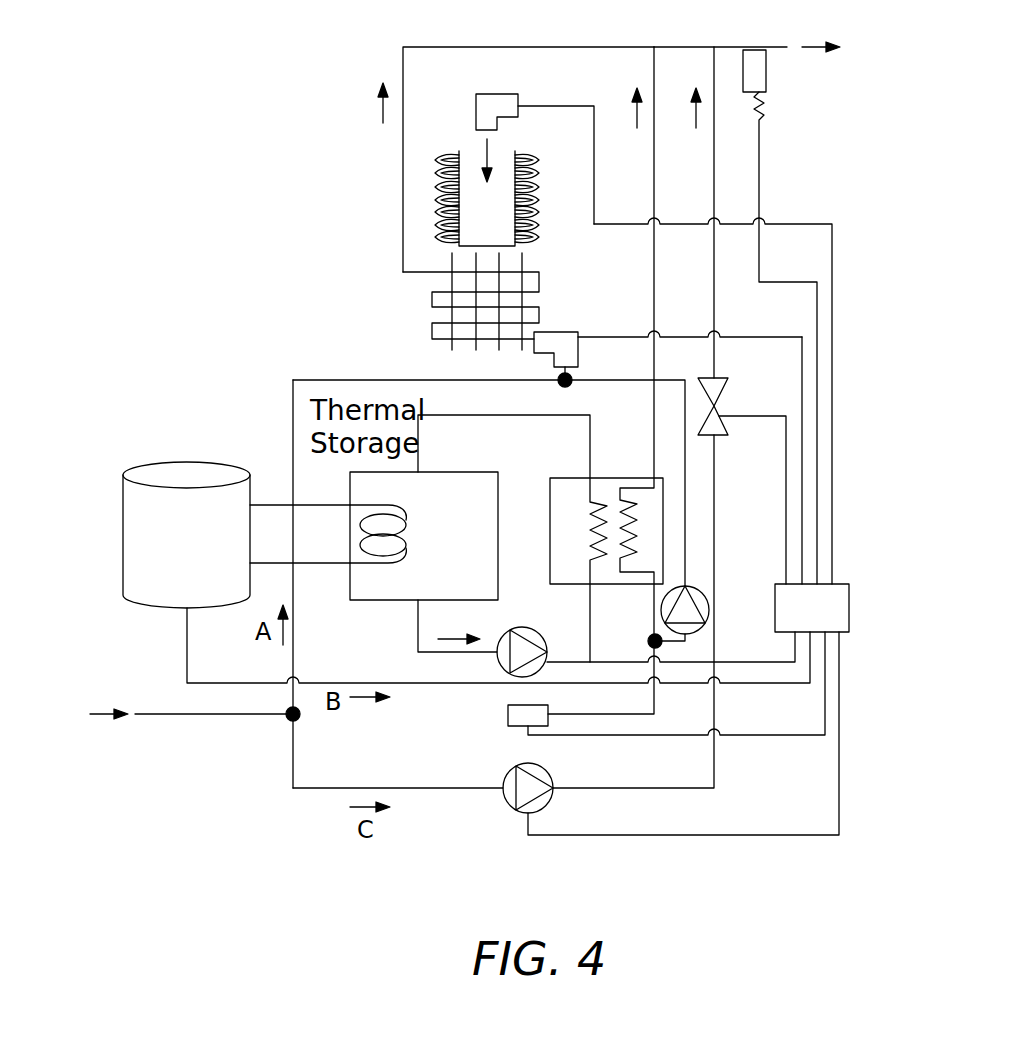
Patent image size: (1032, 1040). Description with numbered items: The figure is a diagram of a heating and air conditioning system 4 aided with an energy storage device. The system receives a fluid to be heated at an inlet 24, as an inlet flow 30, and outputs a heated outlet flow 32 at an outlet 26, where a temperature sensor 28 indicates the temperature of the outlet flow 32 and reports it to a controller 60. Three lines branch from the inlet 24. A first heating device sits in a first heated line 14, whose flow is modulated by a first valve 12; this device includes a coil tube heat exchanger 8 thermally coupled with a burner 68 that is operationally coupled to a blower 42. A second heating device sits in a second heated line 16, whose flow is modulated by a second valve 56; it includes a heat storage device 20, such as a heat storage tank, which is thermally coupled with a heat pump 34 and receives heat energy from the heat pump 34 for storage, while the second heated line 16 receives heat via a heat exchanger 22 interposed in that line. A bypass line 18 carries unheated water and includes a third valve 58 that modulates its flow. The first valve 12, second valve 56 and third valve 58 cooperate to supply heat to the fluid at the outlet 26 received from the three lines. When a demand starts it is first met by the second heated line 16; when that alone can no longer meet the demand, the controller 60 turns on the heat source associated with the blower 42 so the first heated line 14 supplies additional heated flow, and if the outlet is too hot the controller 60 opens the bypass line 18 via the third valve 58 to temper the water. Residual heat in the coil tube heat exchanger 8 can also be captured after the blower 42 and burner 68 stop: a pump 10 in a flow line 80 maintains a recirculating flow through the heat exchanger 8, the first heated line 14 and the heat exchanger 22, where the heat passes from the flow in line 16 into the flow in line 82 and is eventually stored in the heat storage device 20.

The heating system 4 is at (724, 870).
The coil tube heat exchanger 8 is at (432, 330).
The pump 10 is at (538, 633).
The first valve 12 is at (578, 340).
The first heated line 14 is at (403, 188).
The second heated line 16 is at (654, 416).
The bypass line 18 is at (714, 745).
The heat storage device 20 is at (437, 472).
The heat exchanger 22 is at (628, 587).
The inlet 24 is at (208, 716).
The outlet 26 is at (754, 46).
The temperature sensor 28 is at (766, 68).
The inlet flow 30 is at (105, 718).
The outlet flow 32 is at (815, 44).
The heat pump 34 is at (123, 549).
The blower 42 is at (488, 94).
The second valve 56 is at (506, 720).
The third valve 58 is at (725, 377).
The controller 60 is at (518, 526).
The burner 68 is at (520, 241).
The flow line 80 is at (687, 513).
The line 82 is at (470, 415).